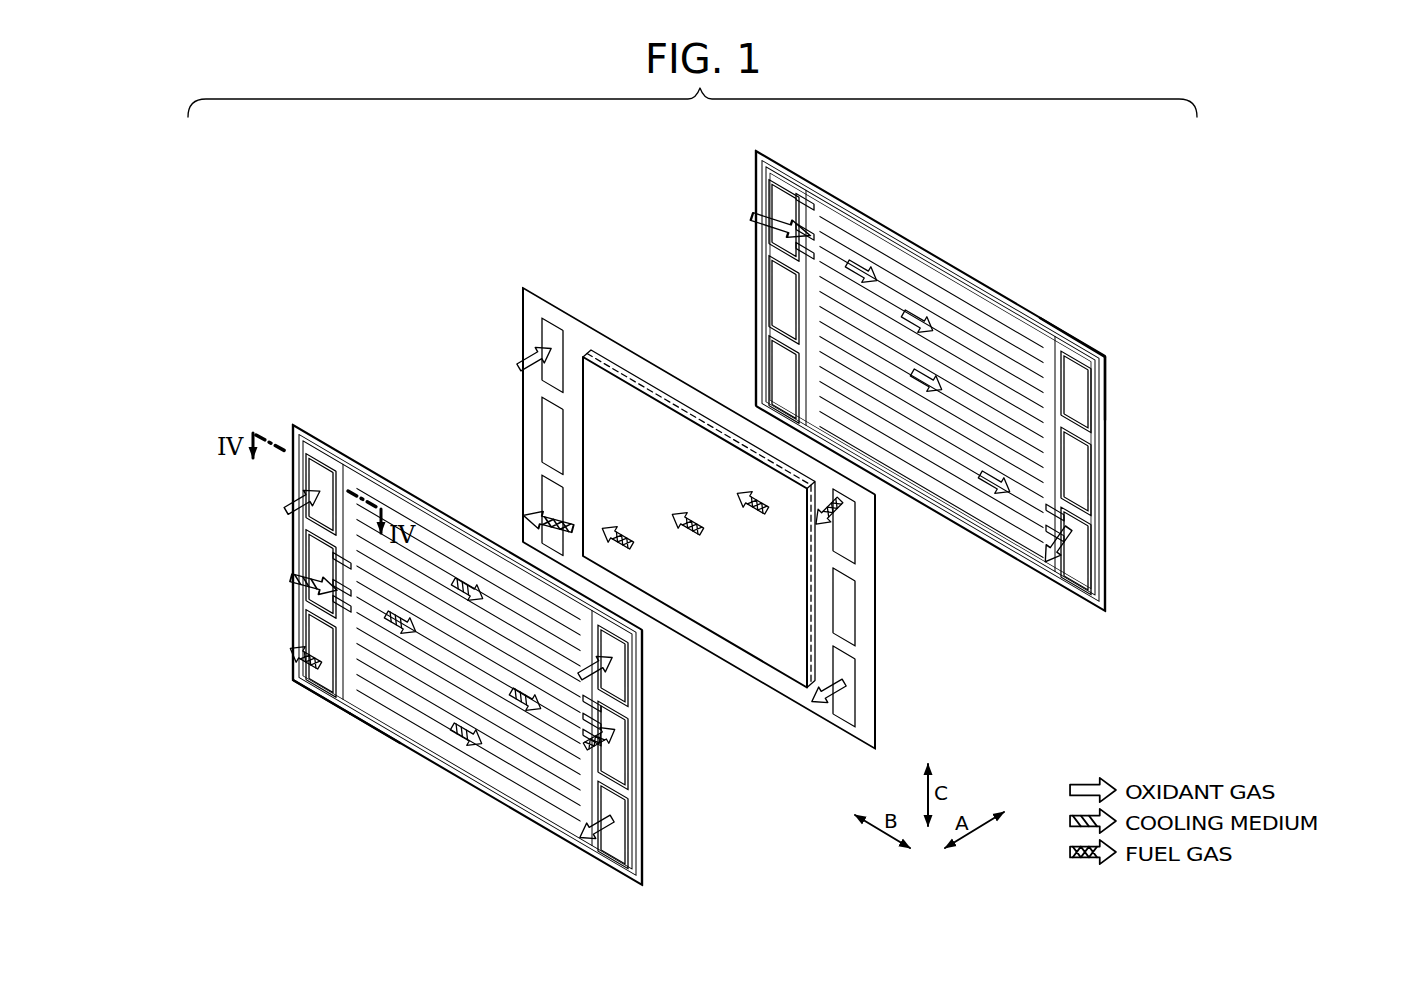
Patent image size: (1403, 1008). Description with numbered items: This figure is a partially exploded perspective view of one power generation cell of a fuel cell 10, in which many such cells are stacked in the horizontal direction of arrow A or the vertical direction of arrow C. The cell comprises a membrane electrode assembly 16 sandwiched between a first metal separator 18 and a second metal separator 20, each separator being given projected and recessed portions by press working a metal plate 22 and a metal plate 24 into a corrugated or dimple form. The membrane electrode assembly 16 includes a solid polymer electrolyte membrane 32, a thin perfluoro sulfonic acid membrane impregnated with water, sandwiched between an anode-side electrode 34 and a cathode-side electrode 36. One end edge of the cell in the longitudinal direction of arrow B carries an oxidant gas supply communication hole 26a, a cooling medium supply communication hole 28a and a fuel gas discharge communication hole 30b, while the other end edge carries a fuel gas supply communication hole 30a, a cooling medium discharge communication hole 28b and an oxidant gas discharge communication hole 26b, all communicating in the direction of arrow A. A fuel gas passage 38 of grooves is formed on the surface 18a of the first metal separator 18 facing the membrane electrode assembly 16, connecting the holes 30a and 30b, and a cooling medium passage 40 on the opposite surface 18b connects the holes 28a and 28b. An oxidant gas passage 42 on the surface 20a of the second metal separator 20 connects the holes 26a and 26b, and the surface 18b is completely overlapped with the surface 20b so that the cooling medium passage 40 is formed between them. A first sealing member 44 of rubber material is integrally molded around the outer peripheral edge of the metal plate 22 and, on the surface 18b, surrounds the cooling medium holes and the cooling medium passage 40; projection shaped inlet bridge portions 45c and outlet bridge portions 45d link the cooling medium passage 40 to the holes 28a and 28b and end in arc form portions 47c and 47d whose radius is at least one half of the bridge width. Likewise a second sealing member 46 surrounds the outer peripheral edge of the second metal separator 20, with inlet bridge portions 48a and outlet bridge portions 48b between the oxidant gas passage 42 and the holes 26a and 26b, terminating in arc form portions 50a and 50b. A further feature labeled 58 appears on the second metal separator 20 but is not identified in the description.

The fuel cell 10 is at (603, 141).
The membrane electrode assembly 16 is at (535, 290).
The first metal separator 18 is at (299, 424).
The second metal separator 20 is at (750, 153).
The metal plate 22 is at (299, 424).
The metal plate 24 is at (750, 153).
The oxidant gas supply communication hole 26a is at (318, 508).
The oxidant gas discharge communication hole 26b is at (615, 835).
The cooling medium supply communication hole 28a is at (318, 552).
The cooling medium discharge communication hole 28b is at (618, 772).
The fuel gas supply communication hole 30a is at (617, 675).
The fuel gas discharge communication hole 30b is at (323, 664).
The solid polymer electrolyte membrane 32 is at (866, 708).
The anode-side electrode 34 is at (633, 408).
The cathode-side electrode 36 is at (679, 422).
The fuel gas passage 38 is at (467, 565).
The cooling medium passage 40 is at (426, 545).
The oxidant gas passage 42 is at (960, 325).
The first sealing member 44 is at (423, 763).
The inlet bridge portion 45c is at (337, 613).
The outlet bridge portion 45d is at (603, 698).
The second sealing member 46 is at (1062, 598).
The arc form portion 47c is at (340, 607).
The arc form portion 47d is at (603, 728).
The inlet bridge portion 48a is at (808, 207).
The outlet bridge portion 48b is at (1047, 507).
The arc form portion 50a is at (793, 197).
The arc form portion 50b is at (1053, 505).
The inner bead seal 58 is at (912, 250).
The surface of the first metal separator 18a is at (550, 831).
The surface of the first metal separator 18b is at (520, 808).
The surface of the second metal separator 20a is at (1063, 336).
The surface of the second metal separator 20b is at (1100, 342).